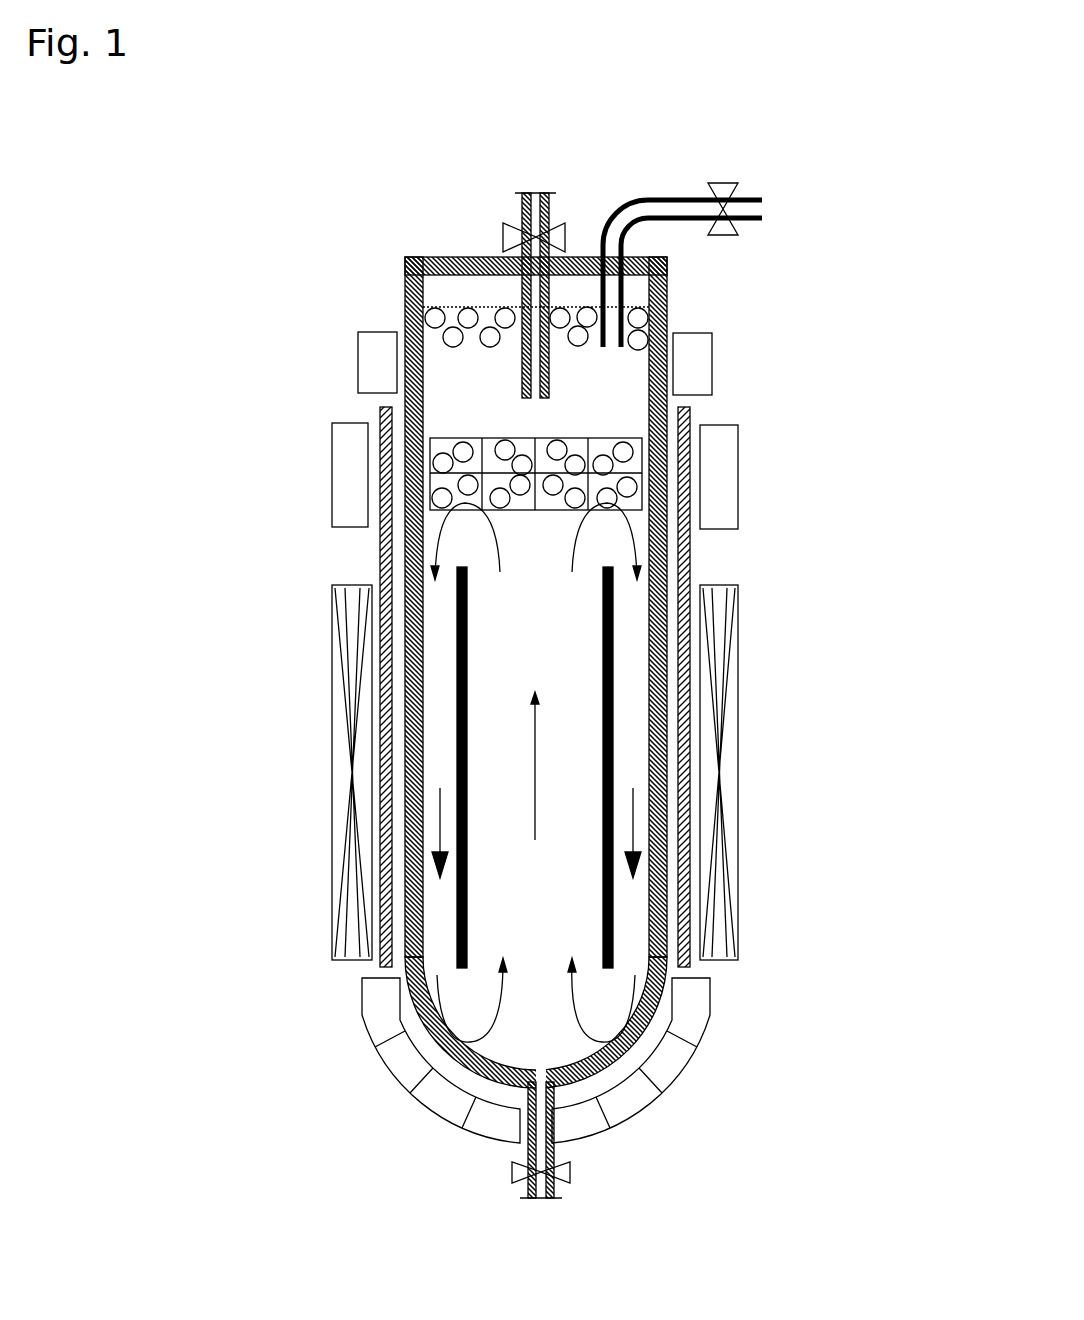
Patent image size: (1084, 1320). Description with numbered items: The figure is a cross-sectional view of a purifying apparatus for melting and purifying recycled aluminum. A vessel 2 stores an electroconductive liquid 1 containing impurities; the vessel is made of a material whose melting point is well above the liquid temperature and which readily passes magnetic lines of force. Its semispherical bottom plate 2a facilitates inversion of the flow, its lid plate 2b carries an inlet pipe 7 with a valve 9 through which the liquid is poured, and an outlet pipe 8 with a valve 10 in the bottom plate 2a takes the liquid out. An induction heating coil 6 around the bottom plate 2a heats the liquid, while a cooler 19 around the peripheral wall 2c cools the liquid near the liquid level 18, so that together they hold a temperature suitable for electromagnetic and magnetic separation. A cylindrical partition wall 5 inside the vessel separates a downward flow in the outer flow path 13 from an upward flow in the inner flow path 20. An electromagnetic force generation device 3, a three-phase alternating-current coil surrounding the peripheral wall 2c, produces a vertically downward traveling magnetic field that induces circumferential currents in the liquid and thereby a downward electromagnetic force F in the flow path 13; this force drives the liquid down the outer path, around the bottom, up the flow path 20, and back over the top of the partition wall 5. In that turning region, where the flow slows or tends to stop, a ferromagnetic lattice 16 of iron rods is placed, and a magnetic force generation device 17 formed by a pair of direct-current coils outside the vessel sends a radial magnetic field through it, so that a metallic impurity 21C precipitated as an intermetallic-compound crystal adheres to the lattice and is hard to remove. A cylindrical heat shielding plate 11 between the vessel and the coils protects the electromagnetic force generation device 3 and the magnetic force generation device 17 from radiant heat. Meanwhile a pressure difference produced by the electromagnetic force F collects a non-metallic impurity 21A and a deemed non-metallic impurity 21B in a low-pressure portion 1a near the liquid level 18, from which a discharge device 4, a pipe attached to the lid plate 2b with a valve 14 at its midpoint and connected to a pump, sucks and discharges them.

The electroconductive liquid 1 is at (507, 1073).
The low-pressure portion 1a is at (452, 308).
The vessel 2 is at (502, 674).
The bottom plate 2a is at (625, 1080).
The lid plate 2b is at (407, 258).
The peripheral wall 2c is at (405, 718).
The electromagnetic force generation device 3 is at (728, 750).
The discharge device 4 is at (671, 197).
The cylindrical partition wall 5 is at (458, 642).
The induction heating coil 6 is at (397, 1050).
The inlet pipe 7 is at (520, 212).
The outlet pipe 8 is at (528, 1195).
The valve 9 is at (560, 232).
The valve 10 is at (568, 1171).
The heat shielding plate 11 is at (385, 558).
The flow path 13 is at (637, 665).
The valve 14 is at (723, 180).
The ferromagnetic lattice 16 is at (645, 452).
The magnetic force generation device 17 is at (335, 500).
The liquid level 18 is at (486, 298).
The cooler 19 is at (705, 352).
The flow path 20 is at (592, 602).
The non-metallic impurity 21A is at (666, 307).
The deemed non-metallic impurity 21B is at (412, 310).
The metallic impurity 21C is at (432, 458).
The electromagnetic force F is at (440, 835).